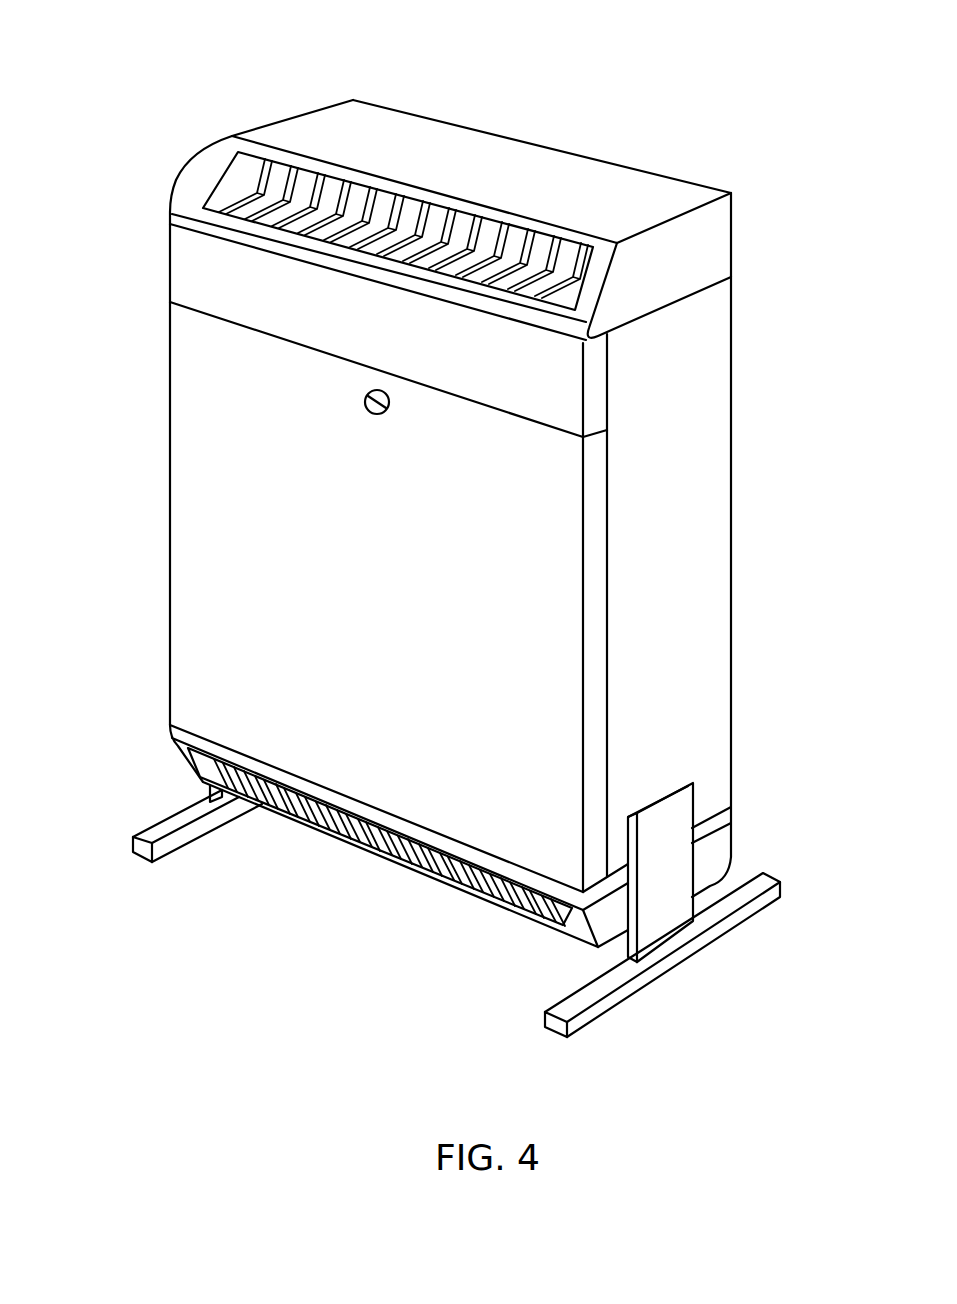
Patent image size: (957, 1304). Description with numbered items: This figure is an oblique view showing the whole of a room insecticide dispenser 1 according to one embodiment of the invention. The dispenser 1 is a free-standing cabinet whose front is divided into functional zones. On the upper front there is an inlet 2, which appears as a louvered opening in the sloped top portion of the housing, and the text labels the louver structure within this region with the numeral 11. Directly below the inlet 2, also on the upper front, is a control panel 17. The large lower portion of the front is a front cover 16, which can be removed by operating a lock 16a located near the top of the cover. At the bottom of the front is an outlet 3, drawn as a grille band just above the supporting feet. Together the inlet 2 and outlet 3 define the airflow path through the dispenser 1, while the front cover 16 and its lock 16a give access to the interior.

The room insecticide dispenser 1 is at (750, 211).
The inlet 2 is at (236, 212).
The louver blades of air outlet 11 is at (303, 178).
The control panel 17 is at (225, 277).
The front cover 16 is at (205, 540).
The lock 16a is at (373, 400).
The outlet 3 is at (350, 827).